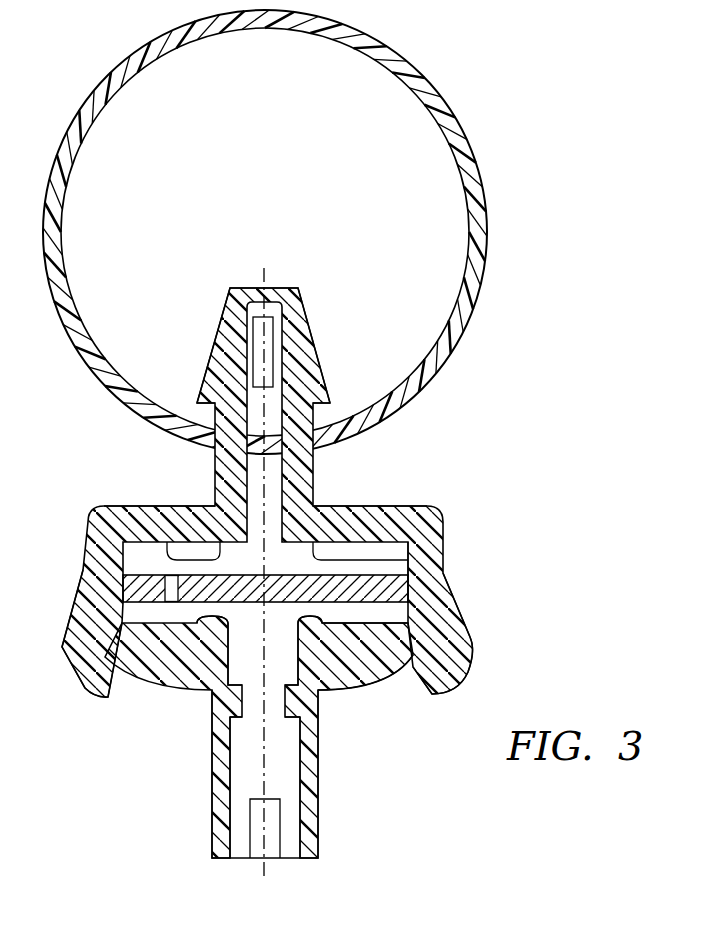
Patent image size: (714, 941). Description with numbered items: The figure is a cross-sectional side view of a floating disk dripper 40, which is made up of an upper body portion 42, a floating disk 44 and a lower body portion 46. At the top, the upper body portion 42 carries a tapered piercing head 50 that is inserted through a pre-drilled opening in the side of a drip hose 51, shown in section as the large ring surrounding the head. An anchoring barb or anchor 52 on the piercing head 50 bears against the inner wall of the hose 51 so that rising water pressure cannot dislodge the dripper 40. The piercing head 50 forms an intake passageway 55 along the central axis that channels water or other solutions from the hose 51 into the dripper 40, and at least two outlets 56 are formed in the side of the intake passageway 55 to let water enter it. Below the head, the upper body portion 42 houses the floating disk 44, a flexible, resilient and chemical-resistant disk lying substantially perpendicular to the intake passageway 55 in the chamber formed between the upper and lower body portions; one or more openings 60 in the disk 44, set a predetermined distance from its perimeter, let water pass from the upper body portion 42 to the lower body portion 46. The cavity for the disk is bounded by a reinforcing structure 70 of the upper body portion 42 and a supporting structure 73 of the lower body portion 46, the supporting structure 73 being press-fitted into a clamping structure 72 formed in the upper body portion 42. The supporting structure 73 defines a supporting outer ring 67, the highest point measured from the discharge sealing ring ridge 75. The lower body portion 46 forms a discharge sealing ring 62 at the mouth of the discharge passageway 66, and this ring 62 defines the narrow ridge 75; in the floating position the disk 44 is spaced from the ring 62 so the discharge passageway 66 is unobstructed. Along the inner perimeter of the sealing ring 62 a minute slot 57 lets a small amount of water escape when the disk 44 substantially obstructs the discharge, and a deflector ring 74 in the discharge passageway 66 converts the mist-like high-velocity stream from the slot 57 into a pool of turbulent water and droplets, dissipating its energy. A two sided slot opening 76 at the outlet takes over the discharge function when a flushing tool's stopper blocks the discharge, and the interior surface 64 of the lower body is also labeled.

The floating disk dripper 40 is at (458, 510).
The upper body portion 42 is at (194, 506).
The floating disk 44 is at (403, 588).
The lower body portion 46 is at (388, 675).
The piercing head 50 is at (229, 305).
The drip hose 51 is at (106, 79).
The anchor 52 is at (326, 407).
The intake passageway 55 is at (275, 288).
The outlets 56 is at (273, 340).
The slot 57 is at (298, 628).
The opening 60 is at (177, 588).
The discharge sealing ring 62 is at (383, 622).
The insert bottom surface 64 is at (348, 684).
The discharge passageway 66 is at (290, 783).
The supporting outer ring 67 is at (122, 610).
The reinforcing structure 70 is at (350, 548).
The clamping structure 72 is at (455, 660).
The supporting structure 73 is at (449, 617).
The deflector ring 74 is at (248, 717).
The discharge sealing ring ridge 75 is at (213, 620).
The two sided slot opening 76 is at (257, 859).